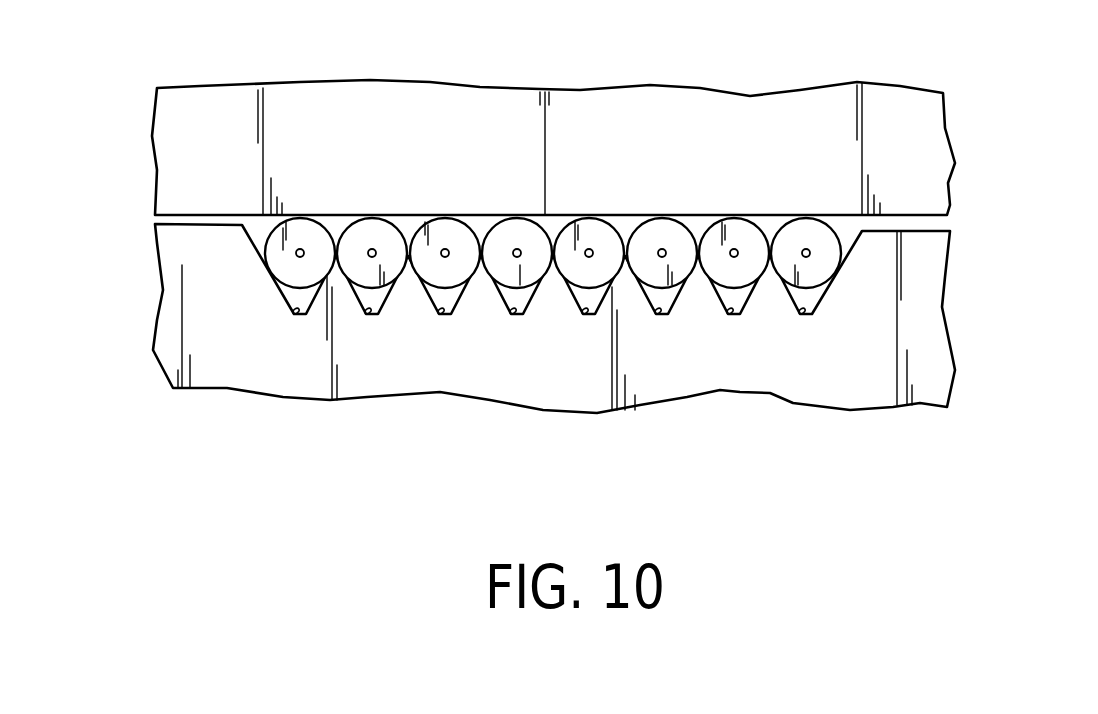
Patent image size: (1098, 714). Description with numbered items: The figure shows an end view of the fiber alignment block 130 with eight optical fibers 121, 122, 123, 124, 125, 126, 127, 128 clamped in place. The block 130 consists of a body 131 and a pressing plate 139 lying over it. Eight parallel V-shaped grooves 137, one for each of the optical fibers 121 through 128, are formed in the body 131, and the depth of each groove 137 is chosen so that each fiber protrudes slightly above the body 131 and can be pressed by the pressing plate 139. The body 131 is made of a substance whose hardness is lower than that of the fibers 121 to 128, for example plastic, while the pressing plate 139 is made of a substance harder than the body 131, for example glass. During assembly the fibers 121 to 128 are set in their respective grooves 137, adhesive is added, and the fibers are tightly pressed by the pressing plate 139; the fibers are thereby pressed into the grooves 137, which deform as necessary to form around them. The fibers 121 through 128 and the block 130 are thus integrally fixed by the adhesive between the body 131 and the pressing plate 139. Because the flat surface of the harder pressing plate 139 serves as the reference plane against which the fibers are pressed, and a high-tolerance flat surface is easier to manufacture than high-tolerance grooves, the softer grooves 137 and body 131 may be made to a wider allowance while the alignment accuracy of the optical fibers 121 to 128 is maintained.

The optical fiber 121 is at (300, 229).
The optical fiber 122 is at (373, 229).
The optical fiber 123 is at (445, 229).
The optical fiber 124 is at (518, 229).
The optical fiber 125 is at (590, 229).
The optical fiber 126 is at (663, 229).
The optical fiber 127 is at (735, 229).
The optical fiber 128 is at (807, 229).
The fiber alignment block 130 is at (1024, 148).
The body 131 is at (935, 253).
The V-shaped grooves 137 is at (300, 315).
The pressing plate 139 is at (932, 182).